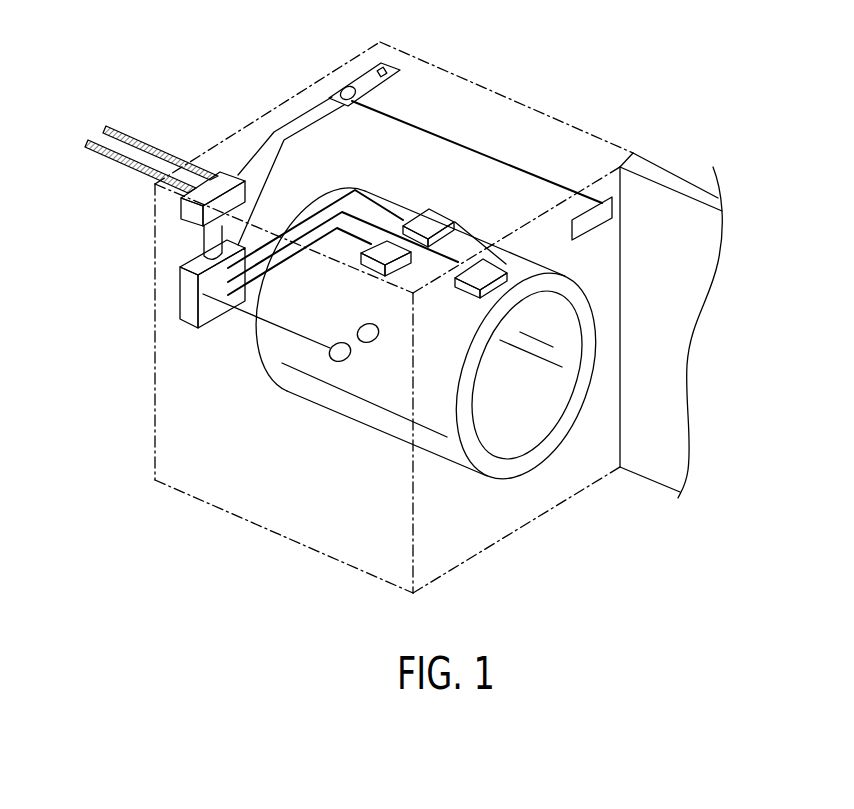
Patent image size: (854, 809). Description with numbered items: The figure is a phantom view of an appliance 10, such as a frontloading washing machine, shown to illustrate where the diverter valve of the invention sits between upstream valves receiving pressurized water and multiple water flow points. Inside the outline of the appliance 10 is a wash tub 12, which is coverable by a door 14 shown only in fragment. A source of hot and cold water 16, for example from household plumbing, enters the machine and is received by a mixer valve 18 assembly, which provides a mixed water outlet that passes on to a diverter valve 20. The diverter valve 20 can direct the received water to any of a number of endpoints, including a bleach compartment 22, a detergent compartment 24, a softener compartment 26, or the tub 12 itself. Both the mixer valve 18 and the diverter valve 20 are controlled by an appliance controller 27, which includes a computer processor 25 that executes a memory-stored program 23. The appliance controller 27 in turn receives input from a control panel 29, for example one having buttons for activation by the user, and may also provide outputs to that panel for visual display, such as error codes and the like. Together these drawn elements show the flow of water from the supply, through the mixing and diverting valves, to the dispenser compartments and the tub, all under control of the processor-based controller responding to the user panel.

The appliance 10 is at (694, 138).
The wash tub 12 is at (542, 374).
The door 14 is at (668, 311).
The source of hot and cold water 16 is at (128, 157).
The mixer valve 18 is at (186, 209).
The diverter valve 20 is at (188, 304).
The bleach compartment 22 is at (431, 222).
The memory-stored program 23 is at (343, 86).
The detergent compartment 24 is at (389, 251).
The computer processor 25 is at (376, 62).
The softener compartment 26 is at (487, 272).
The appliance controller 27 is at (355, 80).
The control panel 29 is at (602, 199).